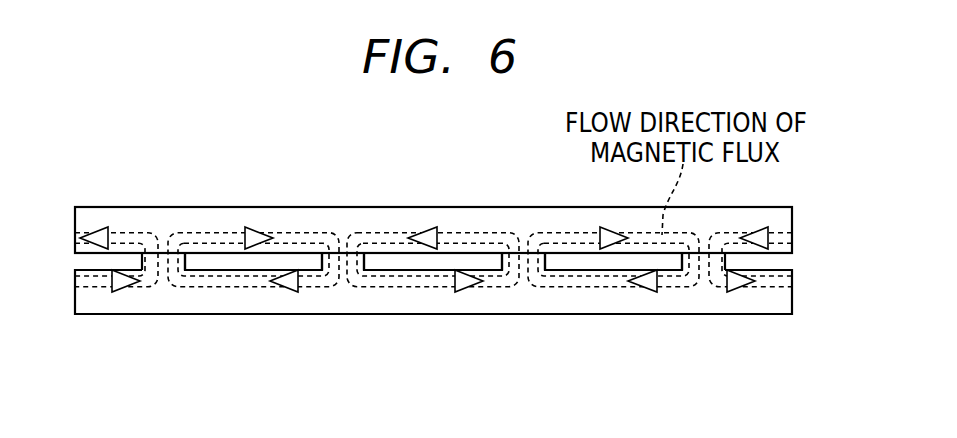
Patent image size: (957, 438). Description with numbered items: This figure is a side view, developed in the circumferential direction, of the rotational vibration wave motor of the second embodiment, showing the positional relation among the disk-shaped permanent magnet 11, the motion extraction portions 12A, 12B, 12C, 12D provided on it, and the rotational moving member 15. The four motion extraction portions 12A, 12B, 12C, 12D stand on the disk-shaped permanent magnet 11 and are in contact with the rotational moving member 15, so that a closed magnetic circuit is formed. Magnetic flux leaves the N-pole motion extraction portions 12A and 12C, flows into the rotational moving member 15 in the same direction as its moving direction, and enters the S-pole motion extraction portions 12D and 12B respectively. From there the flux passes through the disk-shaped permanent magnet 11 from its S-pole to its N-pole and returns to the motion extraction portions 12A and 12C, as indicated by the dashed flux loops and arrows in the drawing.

The rotational moving member 15 is at (778, 218).
The disk-shaped permanent magnet 11 is at (778, 300).
The motion extraction portion 12A is at (165, 255).
The motion extraction portion 12B is at (340, 257).
The motion extraction portion 12C is at (520, 257).
The motion extraction portion 12D is at (702, 262).